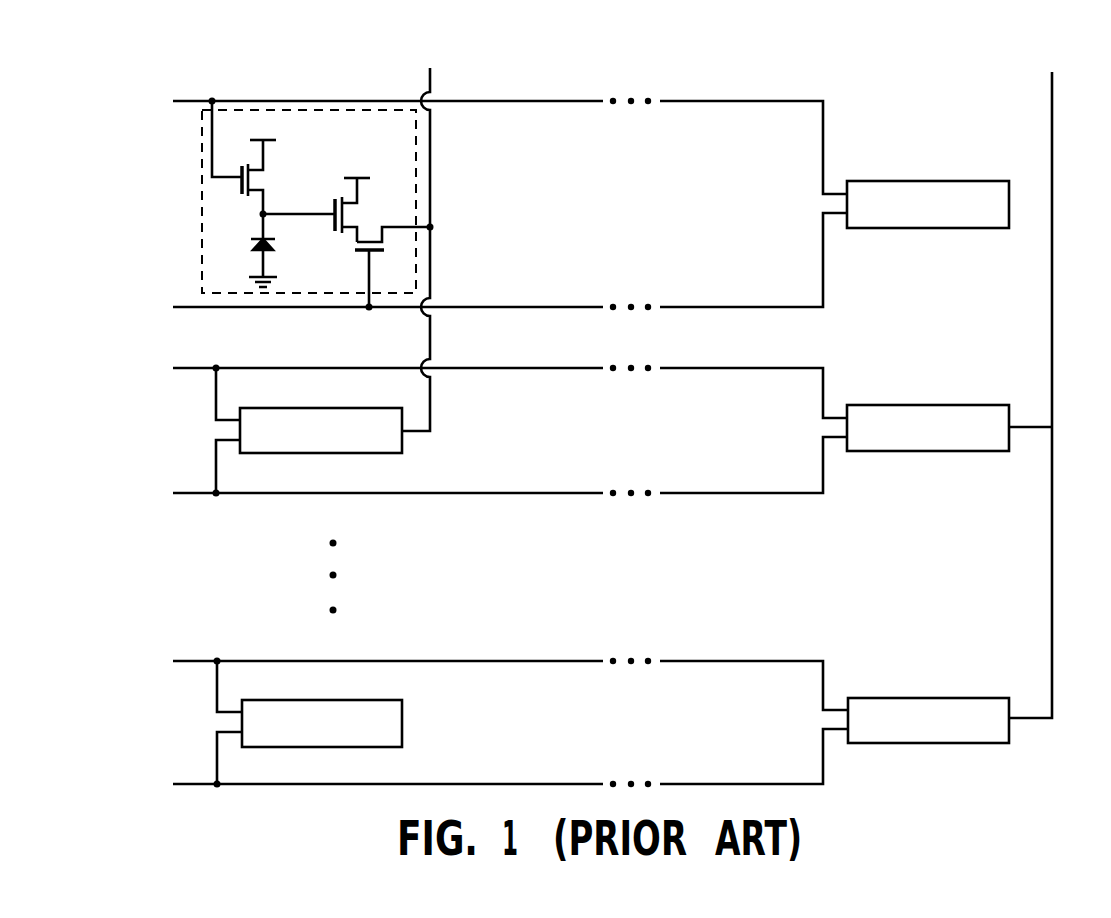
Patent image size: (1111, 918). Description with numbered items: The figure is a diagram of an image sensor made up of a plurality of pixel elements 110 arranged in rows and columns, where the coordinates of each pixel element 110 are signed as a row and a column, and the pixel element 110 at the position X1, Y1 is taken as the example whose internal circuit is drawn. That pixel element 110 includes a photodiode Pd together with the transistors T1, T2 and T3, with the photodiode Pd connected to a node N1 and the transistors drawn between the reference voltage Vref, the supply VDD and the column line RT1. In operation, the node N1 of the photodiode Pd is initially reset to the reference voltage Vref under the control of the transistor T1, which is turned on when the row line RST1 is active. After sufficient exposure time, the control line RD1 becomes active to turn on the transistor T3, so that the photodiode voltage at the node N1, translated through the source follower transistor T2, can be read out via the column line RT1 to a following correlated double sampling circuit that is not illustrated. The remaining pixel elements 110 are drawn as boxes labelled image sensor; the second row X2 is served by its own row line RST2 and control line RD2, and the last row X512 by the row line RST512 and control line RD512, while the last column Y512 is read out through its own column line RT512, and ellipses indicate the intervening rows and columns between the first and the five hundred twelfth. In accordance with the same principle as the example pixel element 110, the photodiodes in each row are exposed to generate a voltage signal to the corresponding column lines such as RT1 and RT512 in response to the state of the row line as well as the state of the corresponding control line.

The pixel element 110 is at (565, 424).
The transistor T1 is at (251, 157).
The source follower transistor T2 is at (359, 210).
The transistor T3 is at (394, 266).
The photodiode Pd is at (275, 250).
The node N1 is at (280, 215).
The reference voltage Vref is at (259, 128).
The supply voltage VDD is at (358, 163).
The row line RST1 is at (479, 142).
The control line RD1 is at (488, 267).
The reset line of row 2 RST2 is at (479, 387).
The read line of row 2 RD2 is at (488, 472).
The reset line of row 512 RST512 is at (470, 680).
The read line of row 512 RD512 is at (475, 763).
The column line RT1 is at (424, 234).
The readout line of column 512 RT512 is at (1048, 380).
The row coordinate X1 is at (136, 164).
The row 2 X2 is at (170, 430).
The row 512 X512 is at (172, 722).
The column coordinate Y1 is at (306, 67).
The column 512 Y512 is at (926, 54).